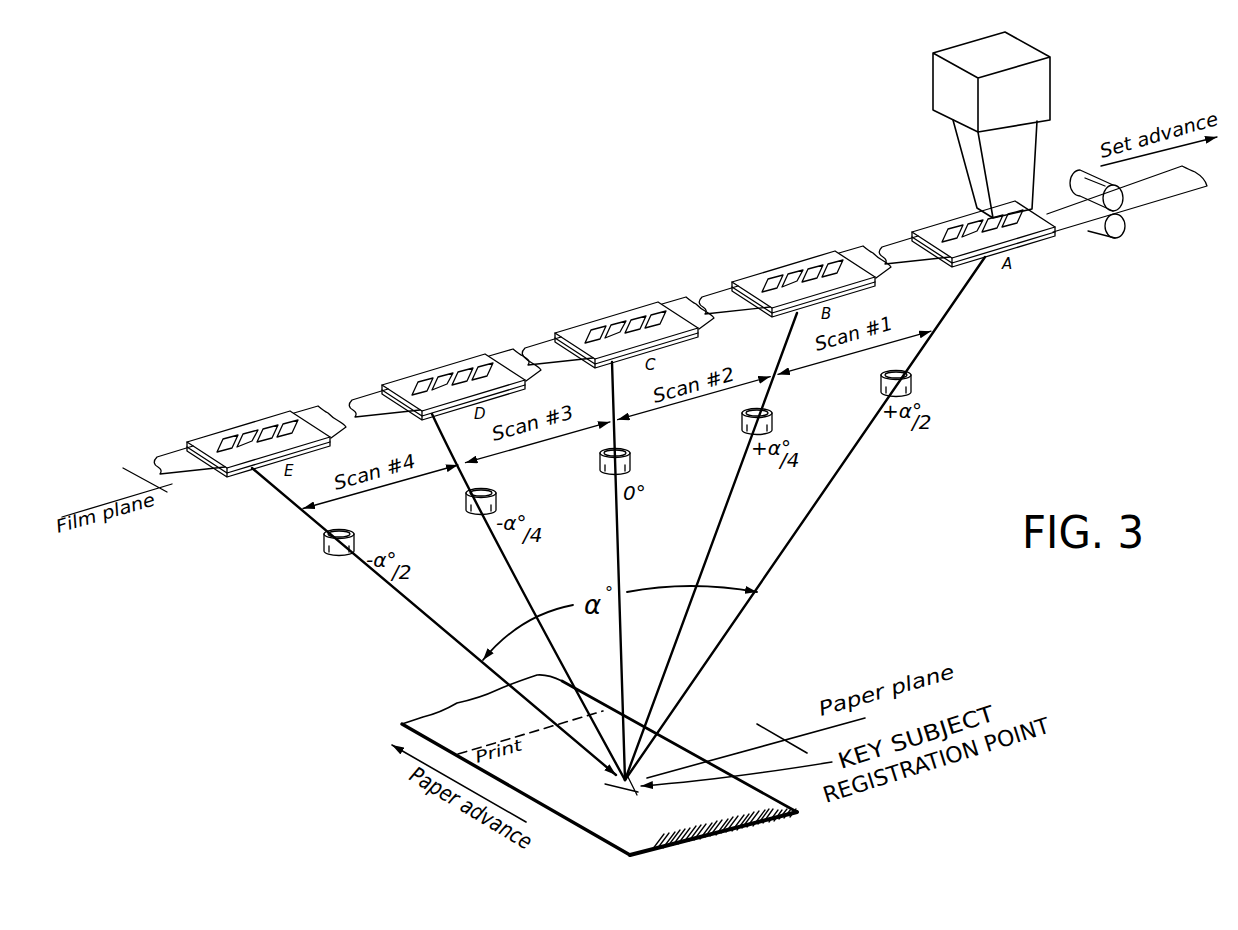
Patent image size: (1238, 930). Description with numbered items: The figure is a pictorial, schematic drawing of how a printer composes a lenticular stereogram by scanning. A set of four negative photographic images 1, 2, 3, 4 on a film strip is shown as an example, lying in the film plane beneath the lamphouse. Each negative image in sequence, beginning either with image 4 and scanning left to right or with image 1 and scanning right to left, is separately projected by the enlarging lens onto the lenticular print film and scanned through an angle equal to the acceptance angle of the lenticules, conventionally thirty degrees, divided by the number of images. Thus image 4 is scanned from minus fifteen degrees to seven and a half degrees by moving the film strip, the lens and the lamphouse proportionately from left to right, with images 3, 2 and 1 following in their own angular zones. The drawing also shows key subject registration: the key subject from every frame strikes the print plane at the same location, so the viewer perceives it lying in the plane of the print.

The negative photographic image # 1 is at (1033, 233).
The negative photographic image # 2 is at (793, 263).
The negative photographic image # 3 is at (597, 320).
The negative photographic image # 4 is at (405, 375).